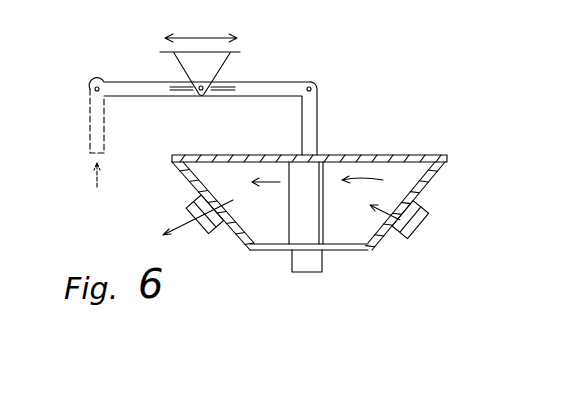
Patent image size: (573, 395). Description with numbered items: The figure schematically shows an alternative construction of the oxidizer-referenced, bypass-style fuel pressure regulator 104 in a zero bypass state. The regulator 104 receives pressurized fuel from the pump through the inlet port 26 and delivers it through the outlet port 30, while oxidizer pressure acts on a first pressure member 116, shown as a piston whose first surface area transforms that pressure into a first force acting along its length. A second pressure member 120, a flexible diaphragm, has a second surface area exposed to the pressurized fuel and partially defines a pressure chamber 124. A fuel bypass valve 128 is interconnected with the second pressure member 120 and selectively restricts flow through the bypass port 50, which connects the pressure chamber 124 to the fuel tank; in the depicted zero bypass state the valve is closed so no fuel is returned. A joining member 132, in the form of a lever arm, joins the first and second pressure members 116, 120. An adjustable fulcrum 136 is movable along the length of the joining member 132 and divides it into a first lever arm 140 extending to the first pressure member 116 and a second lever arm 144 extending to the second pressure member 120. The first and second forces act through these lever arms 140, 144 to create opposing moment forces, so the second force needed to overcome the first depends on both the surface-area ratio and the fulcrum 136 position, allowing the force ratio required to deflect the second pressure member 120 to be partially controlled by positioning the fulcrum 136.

The inlet port 26 is at (426, 209).
The outlet port 30 is at (188, 205).
The bypass port 50 is at (323, 262).
The fuel pressure regulator 104 is at (319, 215).
The first pressure member 116 is at (83, 134).
The second pressure member 120 is at (390, 167).
The pressure chamber 124 is at (353, 222).
The fuel bypass valve 128 is at (297, 215).
The joining member 132 is at (176, 107).
The adjustable fulcrum 136 is at (232, 68).
The first lever arm 140 is at (152, 97).
The second lever arm 144 is at (245, 97).